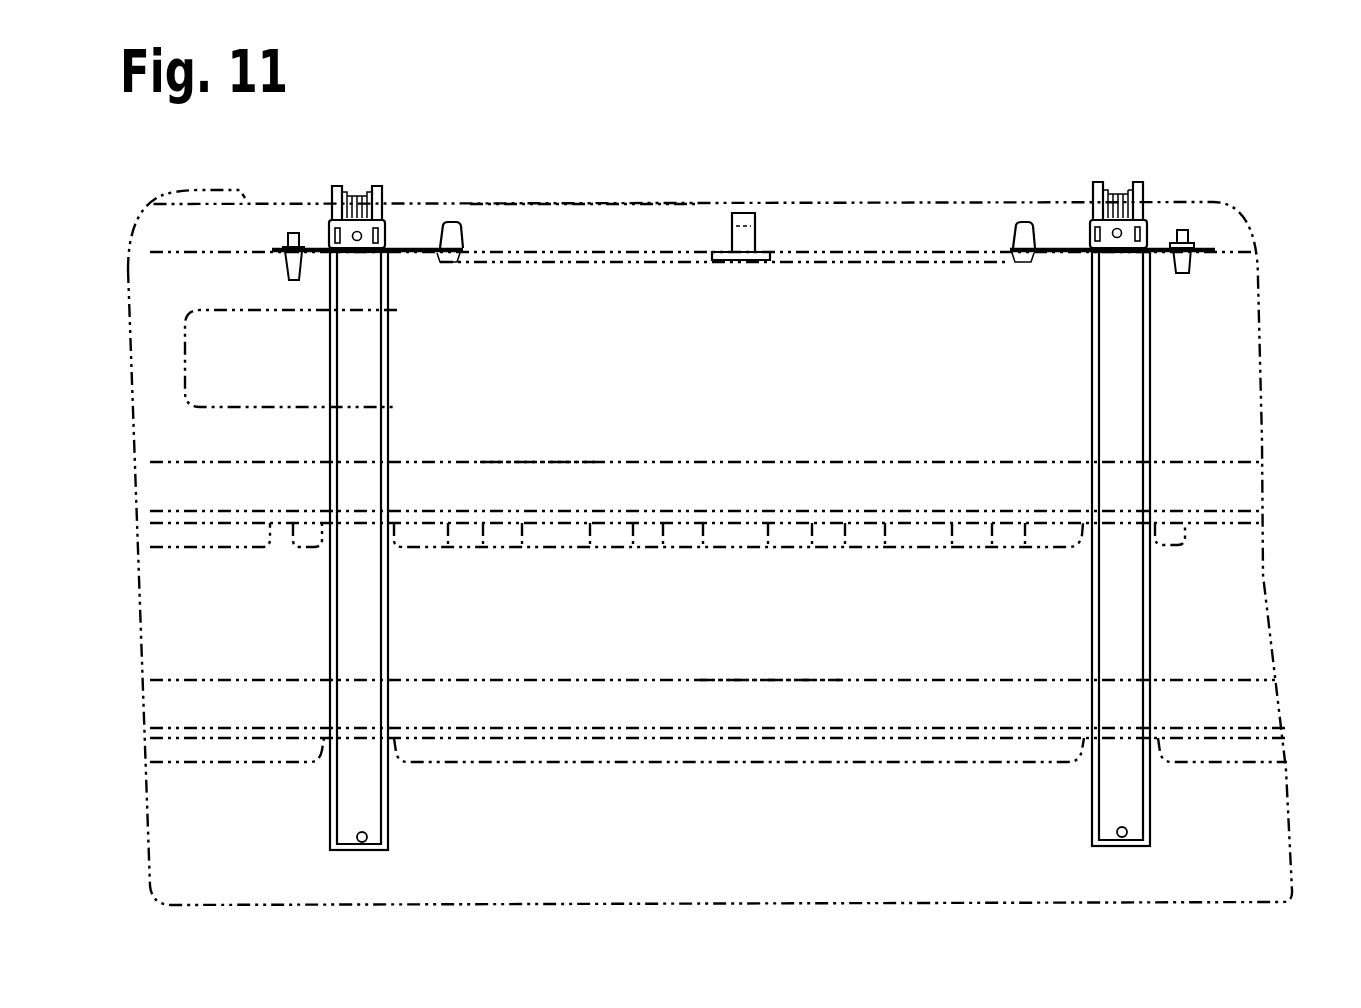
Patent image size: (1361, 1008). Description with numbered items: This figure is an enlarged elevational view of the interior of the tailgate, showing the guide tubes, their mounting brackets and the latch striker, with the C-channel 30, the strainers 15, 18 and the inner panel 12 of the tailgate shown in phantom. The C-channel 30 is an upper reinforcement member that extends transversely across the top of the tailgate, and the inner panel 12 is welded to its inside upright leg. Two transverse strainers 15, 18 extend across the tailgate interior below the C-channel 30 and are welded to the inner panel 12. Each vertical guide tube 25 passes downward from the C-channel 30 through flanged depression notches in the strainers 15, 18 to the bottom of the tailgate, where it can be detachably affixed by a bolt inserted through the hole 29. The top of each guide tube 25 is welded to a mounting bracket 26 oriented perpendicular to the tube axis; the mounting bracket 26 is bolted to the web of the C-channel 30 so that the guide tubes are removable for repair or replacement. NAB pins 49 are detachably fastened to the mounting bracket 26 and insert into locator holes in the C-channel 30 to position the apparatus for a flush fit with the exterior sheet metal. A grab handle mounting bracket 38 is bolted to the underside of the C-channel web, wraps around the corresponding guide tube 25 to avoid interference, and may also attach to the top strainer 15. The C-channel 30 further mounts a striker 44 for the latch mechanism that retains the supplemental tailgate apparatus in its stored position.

The inner panel 12 is at (765, 903).
The strainer 15 is at (537, 461).
The strainer 18 is at (773, 680).
The guide tube 25 is at (389, 650).
The mounting bracket 26 is at (415, 248).
The hole 29 is at (367, 836).
The C-channel 30 is at (575, 203).
The grab handle mounting bracket 38 is at (330, 355).
The striker 44 is at (757, 232).
The NAB pin 49 is at (284, 268).